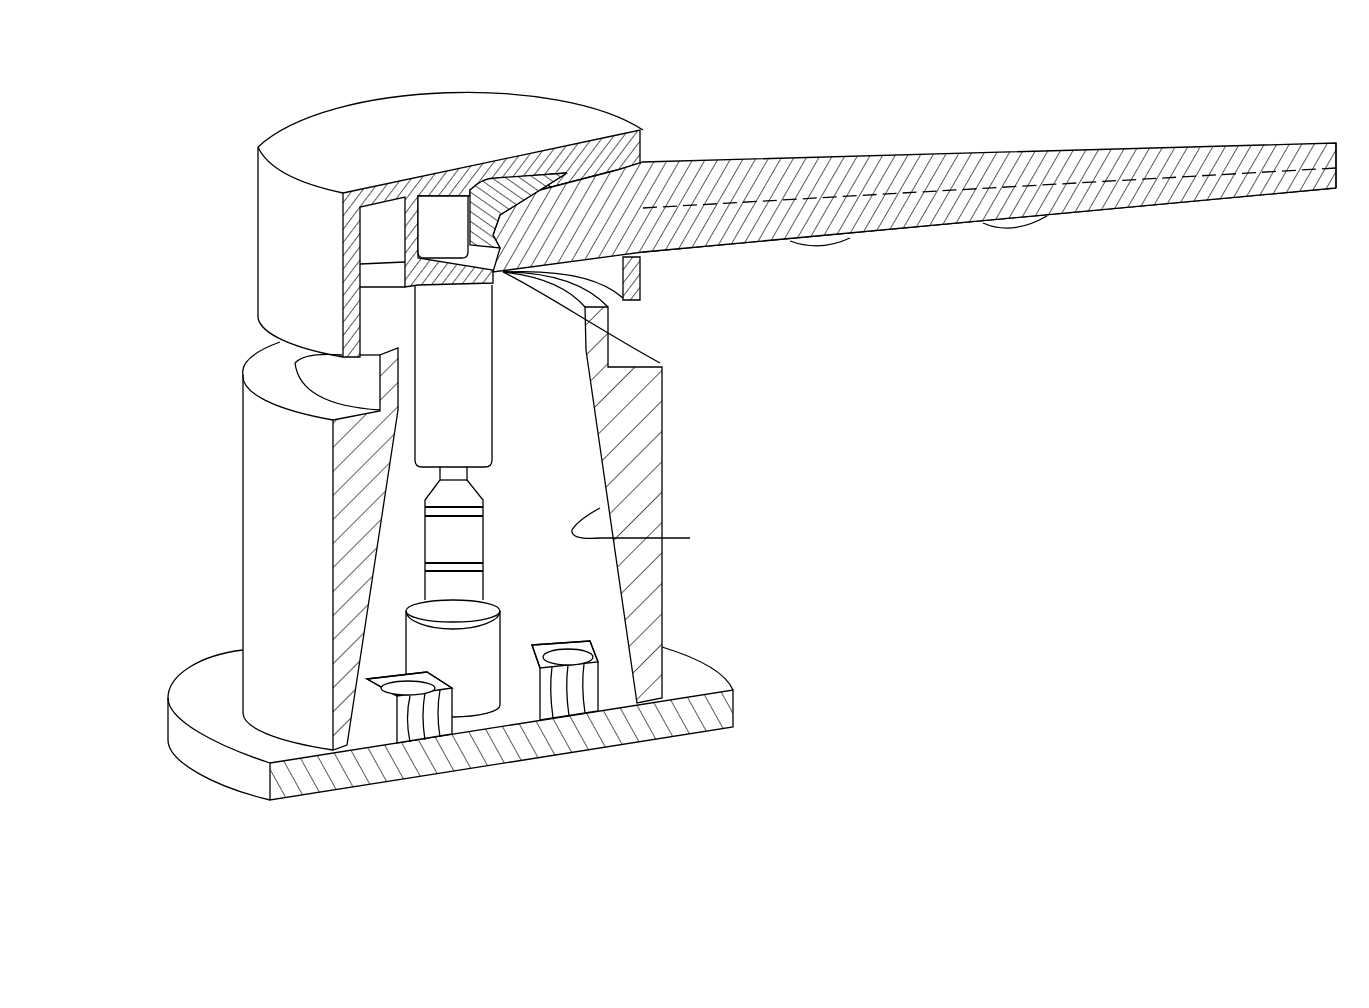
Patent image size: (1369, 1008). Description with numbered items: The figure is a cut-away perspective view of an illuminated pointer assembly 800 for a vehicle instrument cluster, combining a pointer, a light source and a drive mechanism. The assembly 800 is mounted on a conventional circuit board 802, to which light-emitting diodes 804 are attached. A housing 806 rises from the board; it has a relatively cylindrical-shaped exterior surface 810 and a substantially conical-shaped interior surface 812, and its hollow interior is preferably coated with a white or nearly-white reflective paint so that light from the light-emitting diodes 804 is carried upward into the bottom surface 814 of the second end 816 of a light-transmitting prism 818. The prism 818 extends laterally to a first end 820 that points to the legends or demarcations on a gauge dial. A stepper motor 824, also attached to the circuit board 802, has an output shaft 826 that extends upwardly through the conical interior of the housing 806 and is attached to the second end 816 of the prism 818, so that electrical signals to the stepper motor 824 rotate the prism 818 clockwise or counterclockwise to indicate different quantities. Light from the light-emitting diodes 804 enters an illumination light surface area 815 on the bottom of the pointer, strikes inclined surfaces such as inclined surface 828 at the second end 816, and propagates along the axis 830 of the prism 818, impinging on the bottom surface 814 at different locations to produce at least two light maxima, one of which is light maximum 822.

The assembly 800 is at (210, 74).
The circuit board 802 is at (708, 678).
The light-emitting diodes 804 is at (580, 678).
The housing 806 is at (208, 421).
The exterior surface 810 is at (665, 470).
The interior surface 812 is at (648, 531).
The bottom surface 814 is at (660, 363).
The illumination light surface area 815 is at (505, 275).
The second end 816 is at (553, 233).
The light-transmitting prism 818 is at (978, 153).
The first end 820 is at (1308, 143).
The light maximum 822 is at (818, 250).
The stepper motor 824 is at (470, 700).
The output shaft 826 is at (467, 200).
The inclined surface 828 is at (522, 186).
The axis 830 is at (882, 195).